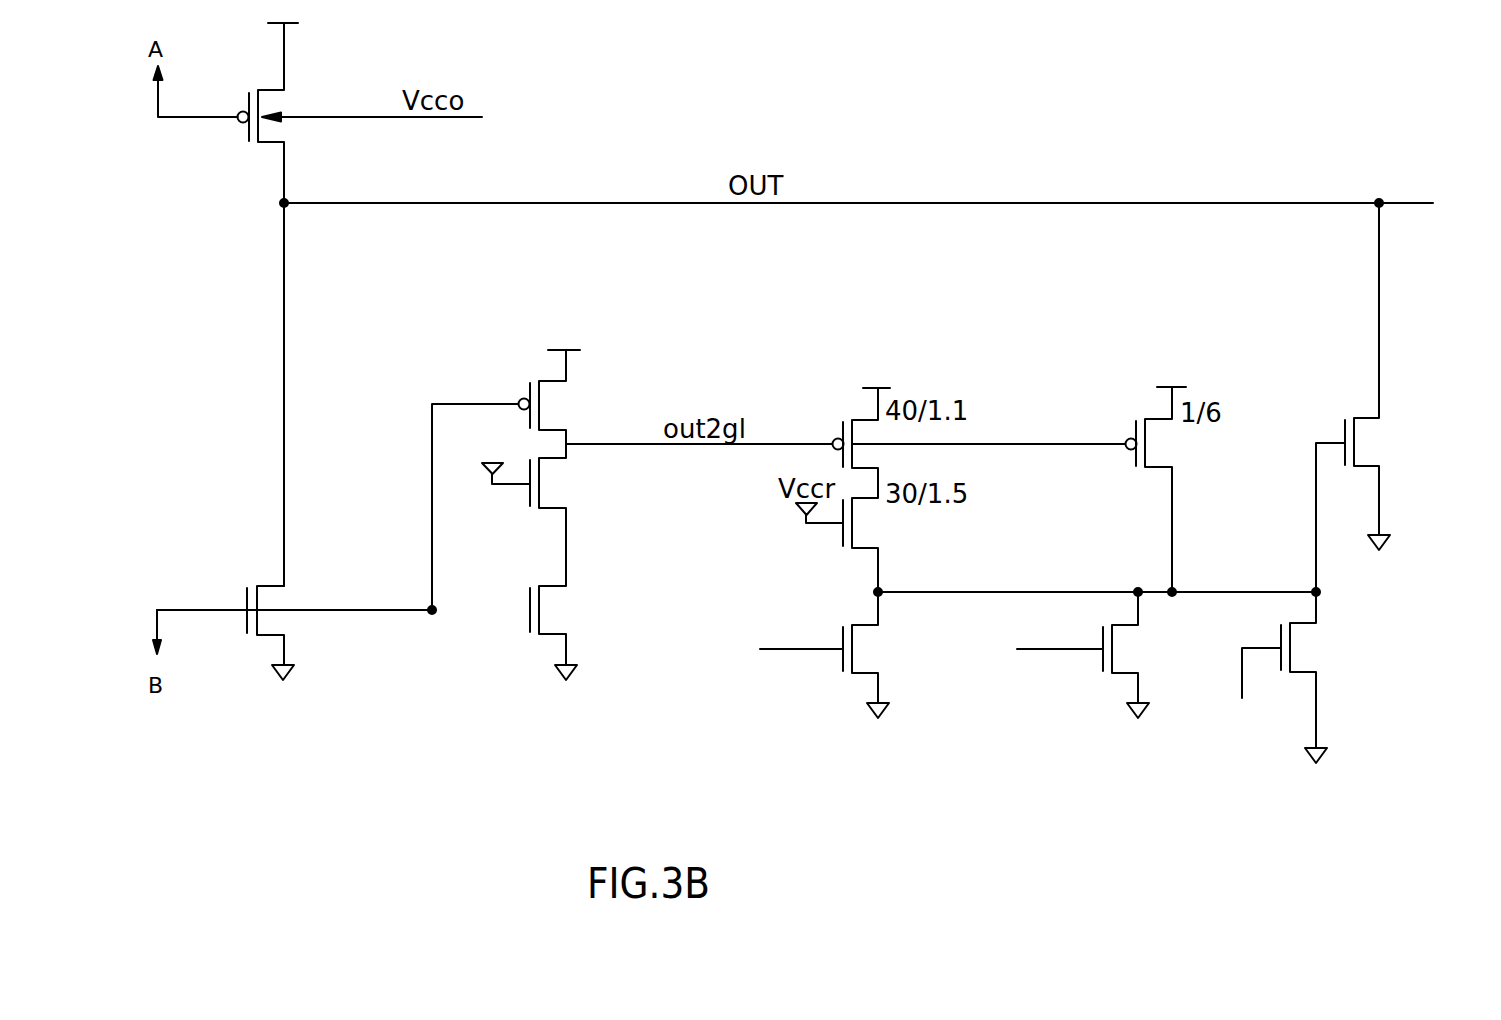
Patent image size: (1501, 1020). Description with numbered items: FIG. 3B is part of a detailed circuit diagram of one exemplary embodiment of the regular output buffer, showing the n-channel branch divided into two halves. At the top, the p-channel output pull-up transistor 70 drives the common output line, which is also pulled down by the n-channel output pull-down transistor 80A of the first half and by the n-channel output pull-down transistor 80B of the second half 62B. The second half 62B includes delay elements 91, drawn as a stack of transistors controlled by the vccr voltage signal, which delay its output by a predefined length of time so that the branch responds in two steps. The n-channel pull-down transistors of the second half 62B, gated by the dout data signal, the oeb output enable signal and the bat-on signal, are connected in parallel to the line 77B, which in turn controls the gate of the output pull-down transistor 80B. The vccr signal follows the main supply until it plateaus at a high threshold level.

The p-channel output pull-up transistor 70 is at (274, 127).
The n-channel output pull-down transistor 80A is at (303, 573).
The n-channel output pull-down transistor 80B is at (1378, 447).
The delay elements 91 is at (700, 332).
The line 77B is at (982, 591).
The second half of n-channel branch 62B is at (834, 752).